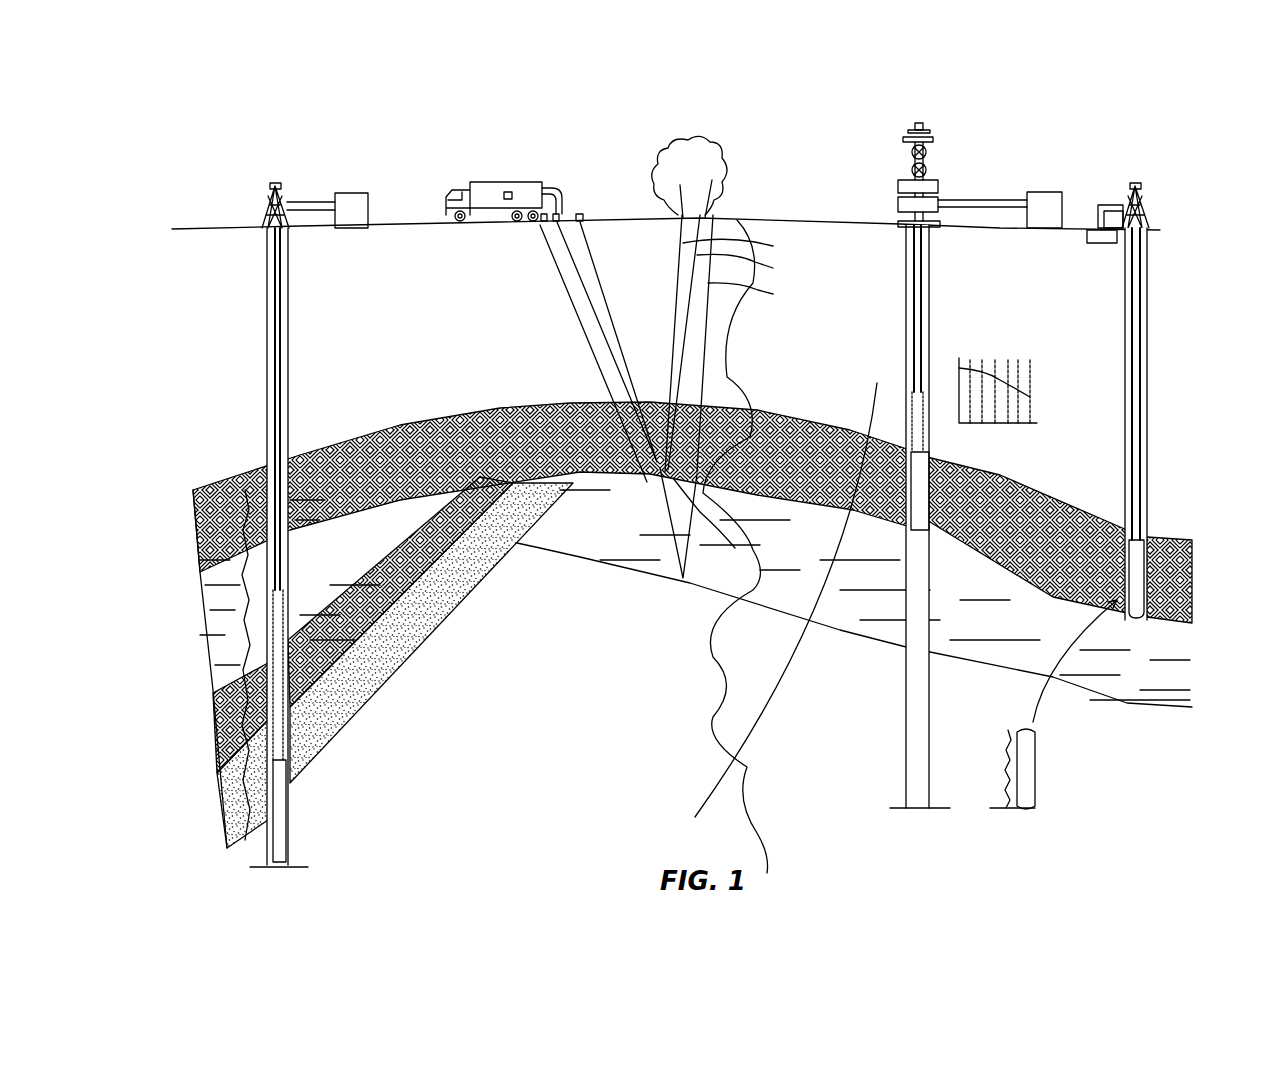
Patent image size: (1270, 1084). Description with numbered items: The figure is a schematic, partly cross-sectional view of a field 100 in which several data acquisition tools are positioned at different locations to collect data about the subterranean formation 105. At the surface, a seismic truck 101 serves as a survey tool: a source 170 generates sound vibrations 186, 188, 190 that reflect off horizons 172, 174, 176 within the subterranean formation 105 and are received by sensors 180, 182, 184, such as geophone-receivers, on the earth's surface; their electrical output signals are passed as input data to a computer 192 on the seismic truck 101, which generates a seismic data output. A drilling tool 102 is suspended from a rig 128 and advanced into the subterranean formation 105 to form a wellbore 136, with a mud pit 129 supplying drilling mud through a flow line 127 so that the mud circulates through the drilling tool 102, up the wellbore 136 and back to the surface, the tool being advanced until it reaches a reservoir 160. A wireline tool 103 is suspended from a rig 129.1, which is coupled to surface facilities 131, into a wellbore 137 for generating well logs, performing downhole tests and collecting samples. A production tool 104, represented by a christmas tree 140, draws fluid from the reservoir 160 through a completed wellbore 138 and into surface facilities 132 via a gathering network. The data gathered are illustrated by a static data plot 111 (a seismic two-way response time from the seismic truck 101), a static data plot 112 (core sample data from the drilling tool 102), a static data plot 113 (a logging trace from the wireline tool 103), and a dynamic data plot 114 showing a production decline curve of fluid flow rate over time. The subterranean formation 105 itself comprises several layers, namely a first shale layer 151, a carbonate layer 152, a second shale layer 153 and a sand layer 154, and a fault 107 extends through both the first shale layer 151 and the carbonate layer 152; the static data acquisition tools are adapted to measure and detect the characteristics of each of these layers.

The field 100 is at (1170, 182).
The seismic truck 101 is at (470, 183).
The drilling tool 102 is at (1160, 620).
The wireline tool 103 is at (290, 803).
The production tool 104 is at (930, 522).
The subterranean formation 105 is at (1162, 345).
The fault 107 is at (870, 385).
The static data plot 111 is at (713, 707).
The static data plot 112 is at (1009, 742).
The static data plot 113 is at (235, 605).
The dynamic data plot 114 is at (1000, 425).
The flow line 127 is at (1110, 205).
The rig 128 is at (1148, 202).
The mud pit 129 is at (1090, 243).
The rig 129.1 is at (265, 203).
The surface facilities 131 is at (346, 192).
The surface facilities 132 is at (1042, 192).
The wellbore 136 is at (1147, 365).
The wellbore 137 is at (267, 352).
The completed wellbore 138 is at (908, 280).
The christmas tree 140 is at (903, 142).
The first shale layer 151 is at (692, 512).
The carbonate layer 152 is at (692, 669).
The second shale layer 153 is at (363, 625).
The sand layer 154 is at (395, 665).
The reservoir 160 is at (567, 684).
The source 170 is at (703, 172).
The horizon 172 is at (545, 402).
The horizon 174 is at (700, 497).
The horizon 176 is at (683, 580).
The sensor 180 is at (581, 214).
The sensor 182 is at (561, 196).
The sensor 184 is at (550, 228).
The sound vibration 186 is at (758, 293).
The sound vibration 188 is at (753, 266).
The sound vibration 190 is at (746, 245).
The computer 192 is at (508, 192).